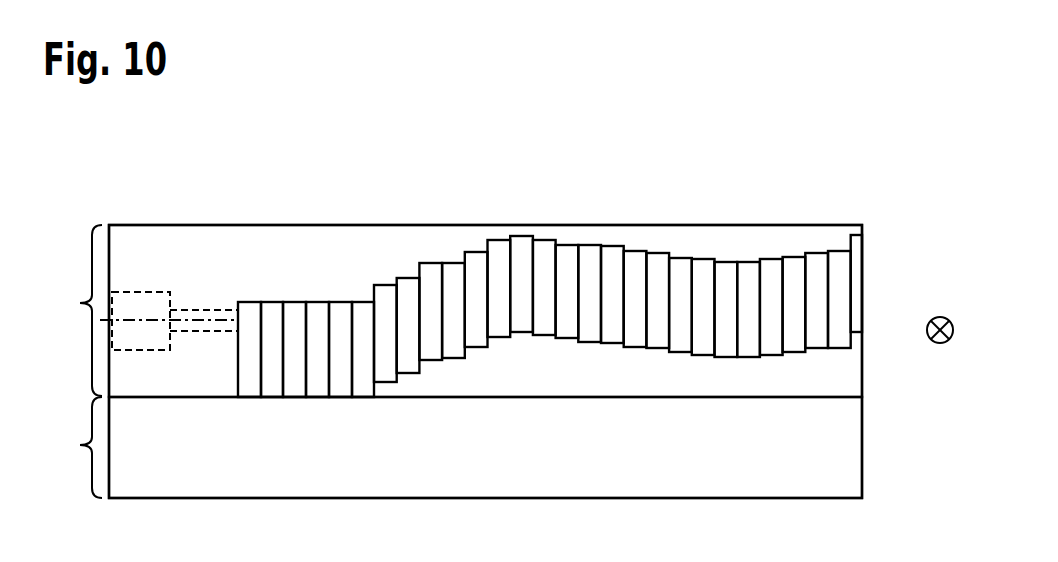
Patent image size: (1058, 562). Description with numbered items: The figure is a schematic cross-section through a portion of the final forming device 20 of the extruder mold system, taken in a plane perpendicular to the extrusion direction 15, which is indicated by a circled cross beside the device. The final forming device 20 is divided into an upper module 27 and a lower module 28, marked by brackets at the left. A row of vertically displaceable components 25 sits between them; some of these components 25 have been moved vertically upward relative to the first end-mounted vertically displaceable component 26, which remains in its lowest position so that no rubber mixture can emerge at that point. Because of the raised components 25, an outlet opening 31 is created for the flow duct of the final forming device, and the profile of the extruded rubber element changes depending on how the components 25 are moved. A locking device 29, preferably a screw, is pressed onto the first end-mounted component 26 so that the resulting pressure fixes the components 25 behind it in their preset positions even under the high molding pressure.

The final forming device 20 is at (822, 173).
The upper module of final forming device 27 is at (453, 311).
The lower module of final forming device 28 is at (453, 447).
The locking device for fixing the vertically displaceable components 29 is at (149, 348).
The first end-mounted vertically displaceable component 26 is at (246, 406).
The vertically displaceable component 25 is at (320, 410).
The outlet opening of flow duct of final forming device 31 is at (517, 367).
The extrusion direction 15 is at (940, 343).